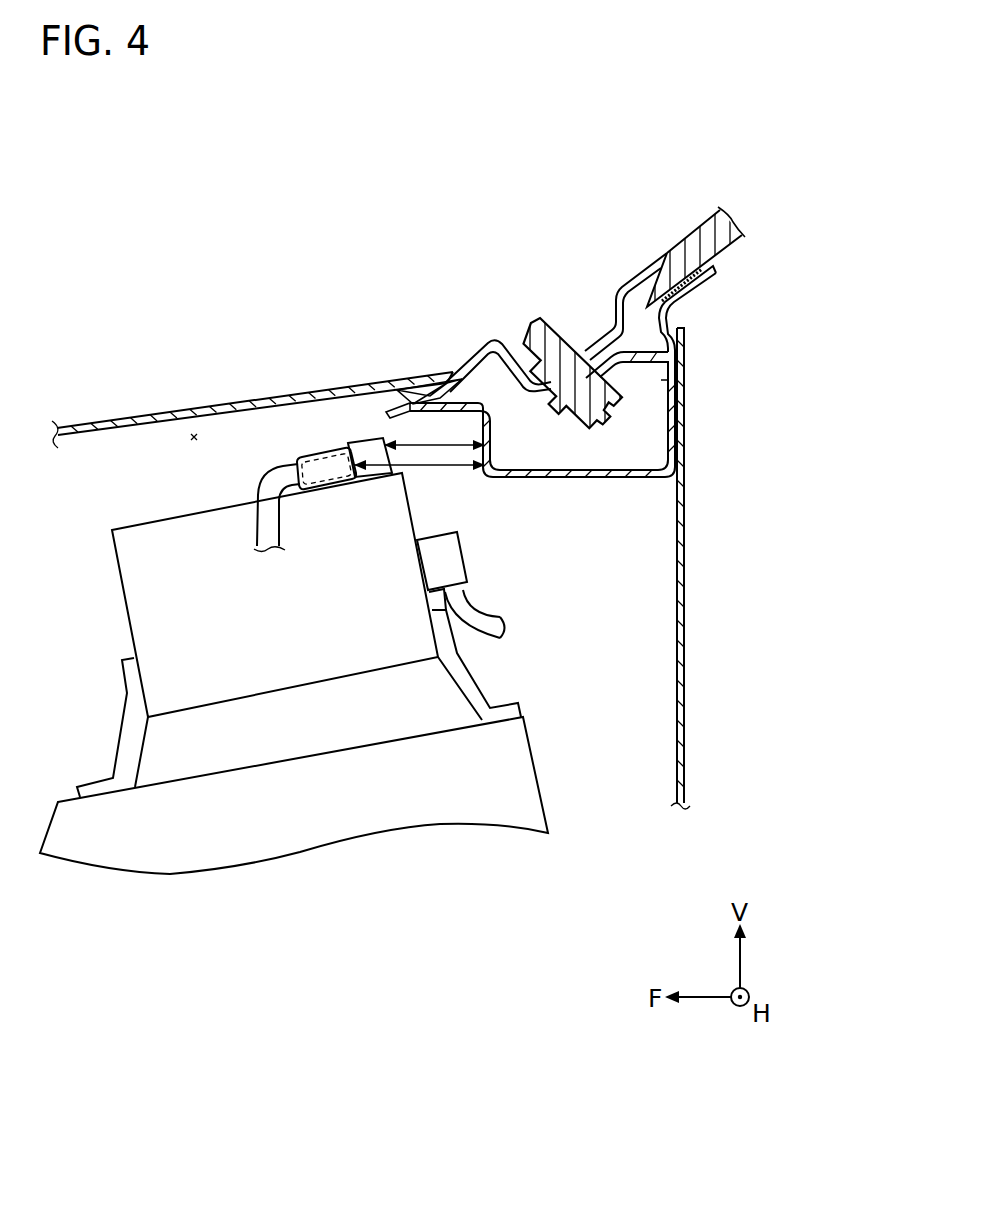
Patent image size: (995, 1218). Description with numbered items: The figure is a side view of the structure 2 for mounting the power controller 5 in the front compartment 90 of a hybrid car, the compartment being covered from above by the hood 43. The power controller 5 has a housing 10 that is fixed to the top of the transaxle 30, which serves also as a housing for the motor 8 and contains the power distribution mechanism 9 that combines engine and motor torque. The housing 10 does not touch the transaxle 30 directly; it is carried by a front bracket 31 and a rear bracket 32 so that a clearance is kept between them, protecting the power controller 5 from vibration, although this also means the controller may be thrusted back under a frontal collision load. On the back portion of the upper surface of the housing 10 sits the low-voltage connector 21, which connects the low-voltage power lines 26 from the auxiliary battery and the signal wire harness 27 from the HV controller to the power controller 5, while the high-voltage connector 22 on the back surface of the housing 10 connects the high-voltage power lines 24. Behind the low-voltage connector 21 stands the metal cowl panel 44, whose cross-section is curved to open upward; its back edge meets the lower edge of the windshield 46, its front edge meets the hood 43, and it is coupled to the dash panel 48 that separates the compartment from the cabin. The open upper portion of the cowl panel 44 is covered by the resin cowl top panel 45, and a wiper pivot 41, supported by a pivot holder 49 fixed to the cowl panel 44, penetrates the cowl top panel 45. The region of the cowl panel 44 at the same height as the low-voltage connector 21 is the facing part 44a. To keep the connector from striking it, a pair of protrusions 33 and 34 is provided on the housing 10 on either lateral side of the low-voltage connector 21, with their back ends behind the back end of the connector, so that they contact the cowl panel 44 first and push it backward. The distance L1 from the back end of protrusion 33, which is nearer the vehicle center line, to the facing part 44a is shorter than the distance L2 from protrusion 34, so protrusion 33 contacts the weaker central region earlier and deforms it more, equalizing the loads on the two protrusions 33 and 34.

The structure for mounting the power controller 2 is at (116, 335).
The hood 43 is at (102, 426).
The front compartment 90 is at (194, 436).
The low-voltage power lines 26 is at (263, 399).
The signal wire harness 27 is at (300, 487).
The low-voltage connector 21 is at (332, 447).
The protrusion 33 is at (368, 446).
The protrusion 34 is at (279, 478).
The housing 10 is at (275, 589).
The power controller 5 is at (163, 530).
The front bracket 31 is at (130, 680).
The high-voltage connector 22 is at (450, 547).
The high-voltage power lines 24 is at (470, 612).
The rear bracket 32 is at (457, 670).
The transaxle 30 is at (294, 821).
The motor 8 is at (294, 821).
The power distribution mechanism 9 is at (293, 843).
The distance from the back end of protrusion 33 to the cowl panel L1 is at (442, 443).
The distance from the back end of protrusion 34 to the cowl panel L2 is at (435, 467).
The cowl panel 44 is at (632, 470).
The facing part 44a is at (493, 398).
The wiper pivot 41 is at (548, 316).
The cowl top panel 45 is at (598, 343).
The windshield 46 is at (690, 247).
The pivot holder 49 is at (680, 338).
The dash panel 48 is at (685, 633).